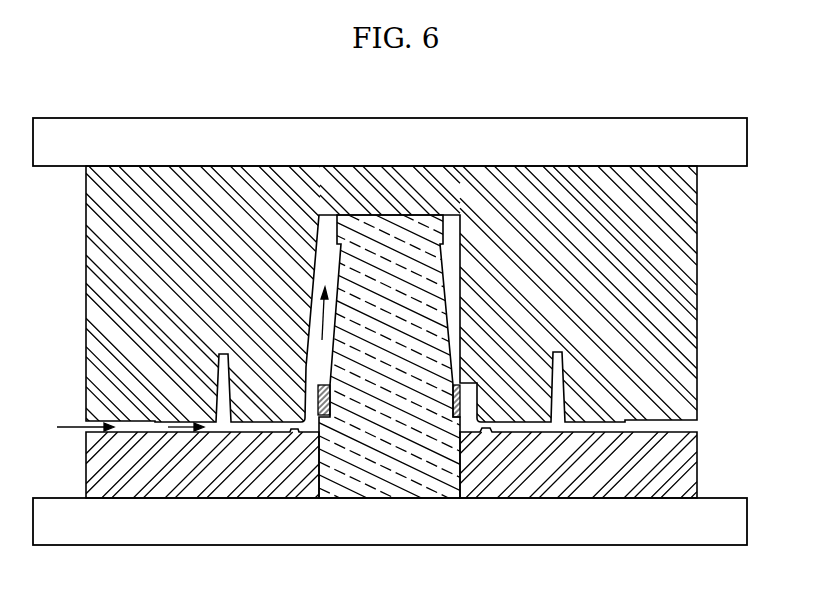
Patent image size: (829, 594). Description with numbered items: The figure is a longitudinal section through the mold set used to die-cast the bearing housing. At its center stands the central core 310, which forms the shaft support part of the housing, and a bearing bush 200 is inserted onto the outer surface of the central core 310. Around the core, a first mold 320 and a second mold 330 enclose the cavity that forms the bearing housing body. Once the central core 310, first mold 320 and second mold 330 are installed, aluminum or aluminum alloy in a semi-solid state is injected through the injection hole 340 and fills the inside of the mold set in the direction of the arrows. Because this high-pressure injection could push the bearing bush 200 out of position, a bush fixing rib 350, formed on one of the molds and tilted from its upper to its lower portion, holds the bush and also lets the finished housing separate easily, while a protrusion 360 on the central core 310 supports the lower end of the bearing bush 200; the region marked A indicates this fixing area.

The bearing bush 200 is at (468, 412).
The central core 310 is at (392, 480).
The first mold 320 is at (685, 326).
The second mold 330 is at (685, 462).
The injection hole 340 is at (86, 421).
The bush fixing rib 350 is at (462, 386).
The protrusion 360 is at (463, 420).
The region A is at (462, 376).